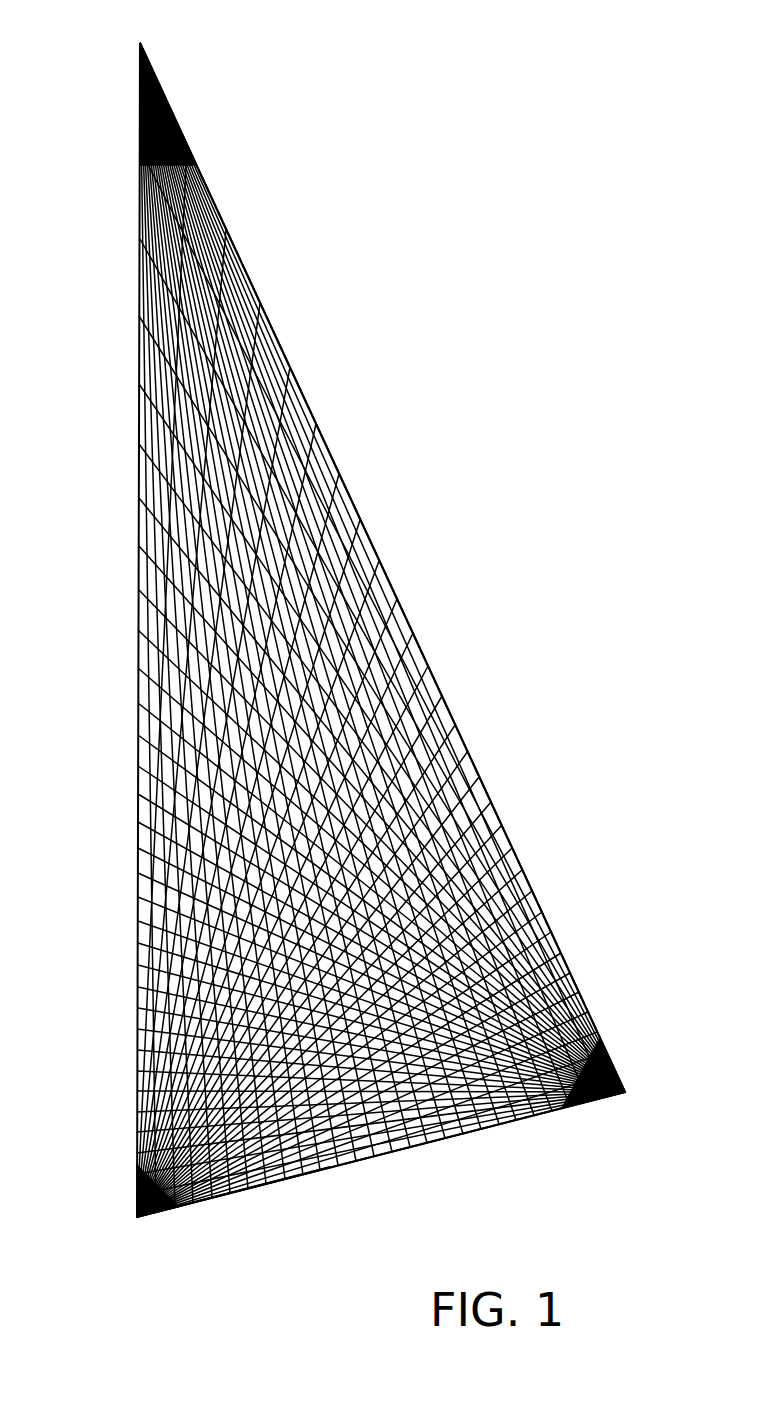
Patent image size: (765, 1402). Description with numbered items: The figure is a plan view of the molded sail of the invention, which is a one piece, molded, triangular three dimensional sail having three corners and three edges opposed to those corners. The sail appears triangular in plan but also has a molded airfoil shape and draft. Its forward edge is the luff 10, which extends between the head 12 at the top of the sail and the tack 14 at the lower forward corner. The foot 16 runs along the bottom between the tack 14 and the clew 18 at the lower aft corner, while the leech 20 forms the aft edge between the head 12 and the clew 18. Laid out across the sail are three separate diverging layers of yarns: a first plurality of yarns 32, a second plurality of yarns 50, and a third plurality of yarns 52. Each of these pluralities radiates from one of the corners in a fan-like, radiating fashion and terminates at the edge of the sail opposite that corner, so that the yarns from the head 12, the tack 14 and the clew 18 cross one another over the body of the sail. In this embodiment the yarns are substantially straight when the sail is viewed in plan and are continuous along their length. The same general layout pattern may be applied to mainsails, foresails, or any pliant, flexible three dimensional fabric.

The luff 10 is at (138, 703).
The head 12 is at (143, 50).
The tack 14 is at (137, 1217).
The foot 16 is at (345, 1167).
The clew 18 is at (625, 1092).
The leech 20 is at (445, 695).
The first plurality of yarns 32 is at (243, 1192).
The second plurality of yarns 50 is at (383, 620).
The third plurality of yarns 52 is at (138, 607).